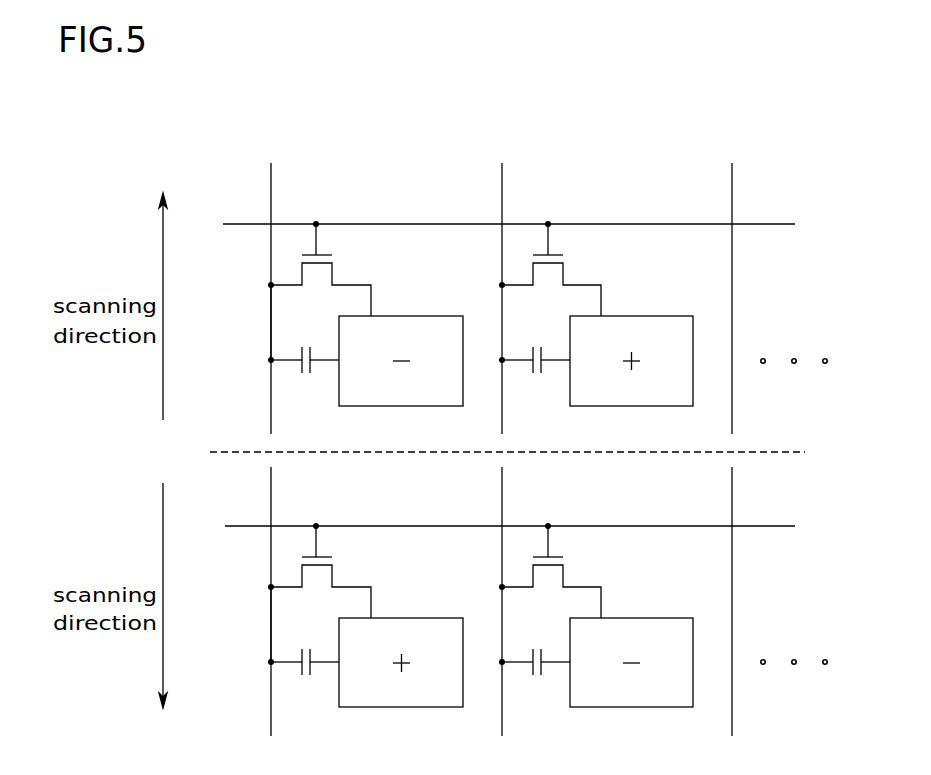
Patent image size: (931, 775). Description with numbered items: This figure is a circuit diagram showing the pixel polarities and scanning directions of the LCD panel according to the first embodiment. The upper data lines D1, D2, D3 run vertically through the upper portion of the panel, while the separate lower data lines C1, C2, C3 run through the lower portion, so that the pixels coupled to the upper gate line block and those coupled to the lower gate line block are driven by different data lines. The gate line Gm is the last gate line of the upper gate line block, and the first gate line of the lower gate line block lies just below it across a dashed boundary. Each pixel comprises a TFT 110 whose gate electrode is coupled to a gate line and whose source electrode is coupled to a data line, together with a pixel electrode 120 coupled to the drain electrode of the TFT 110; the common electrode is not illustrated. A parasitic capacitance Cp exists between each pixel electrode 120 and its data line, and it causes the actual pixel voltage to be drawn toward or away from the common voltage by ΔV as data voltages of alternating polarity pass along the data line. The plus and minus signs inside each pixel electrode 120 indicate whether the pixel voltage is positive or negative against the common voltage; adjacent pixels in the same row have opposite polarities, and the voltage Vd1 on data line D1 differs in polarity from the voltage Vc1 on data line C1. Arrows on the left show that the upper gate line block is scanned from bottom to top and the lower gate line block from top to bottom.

The TFT 110 is at (333, 270).
The pixel electrode 120 is at (447, 316).
The parasitic capacitance Cp is at (419, 523).
The last gate line of the upper gate line block Gm is at (499, 215).
The first upper data line D1 is at (272, 286).
The upper data line D2 is at (502, 286).
The upper data line D3 is at (735, 286).
The first lower data line C1 is at (272, 617).
The lower data line C2 is at (502, 617).
The lower data line C3 is at (735, 617).
The data voltage Vd1 is at (271, 331).
The common voltage Vc1 is at (271, 631).